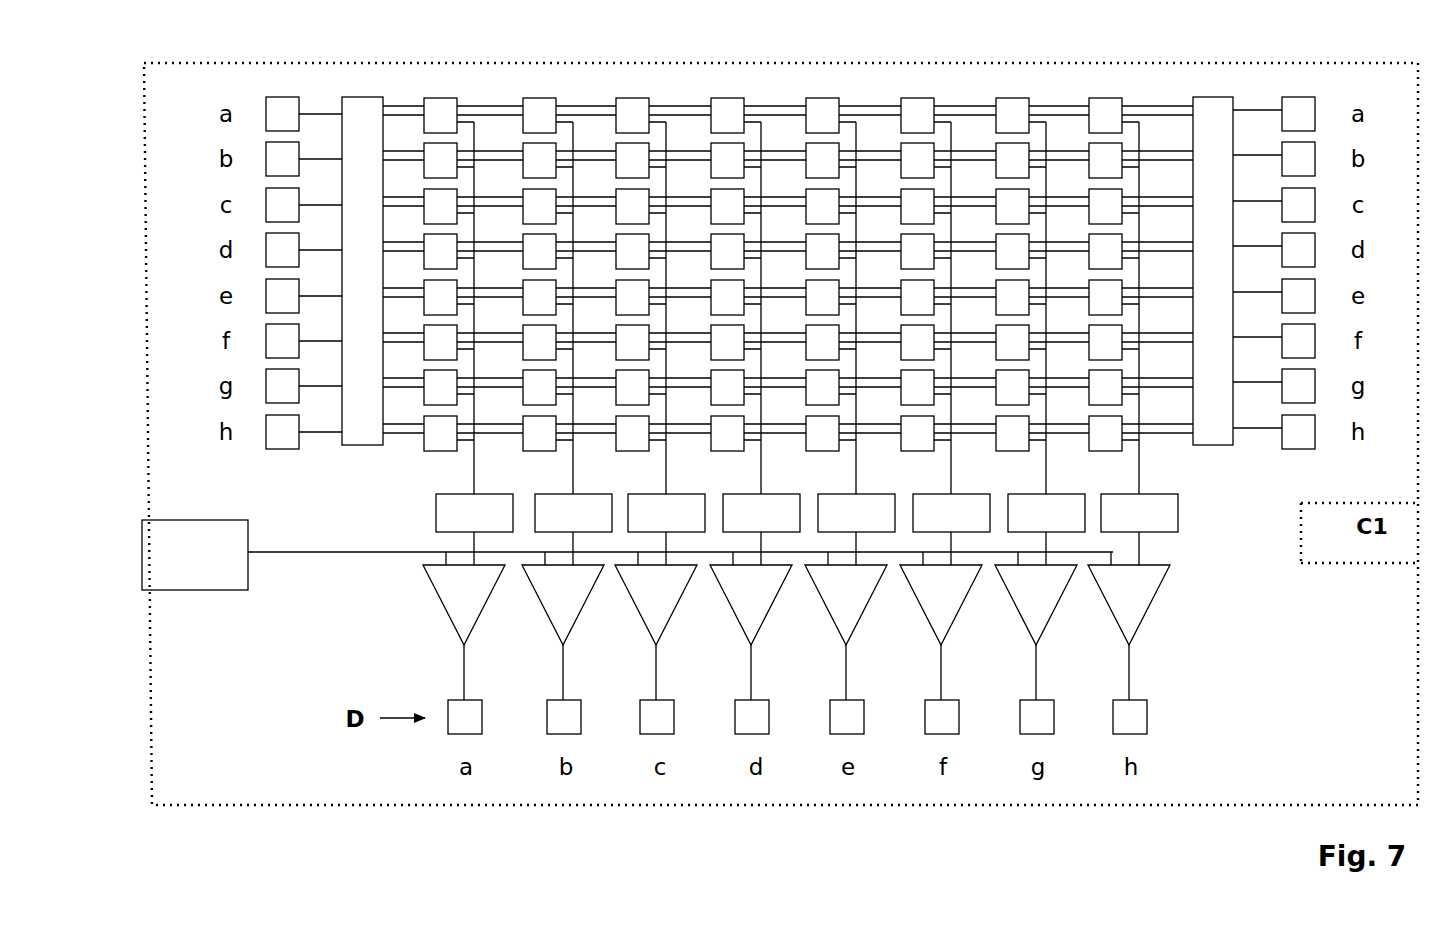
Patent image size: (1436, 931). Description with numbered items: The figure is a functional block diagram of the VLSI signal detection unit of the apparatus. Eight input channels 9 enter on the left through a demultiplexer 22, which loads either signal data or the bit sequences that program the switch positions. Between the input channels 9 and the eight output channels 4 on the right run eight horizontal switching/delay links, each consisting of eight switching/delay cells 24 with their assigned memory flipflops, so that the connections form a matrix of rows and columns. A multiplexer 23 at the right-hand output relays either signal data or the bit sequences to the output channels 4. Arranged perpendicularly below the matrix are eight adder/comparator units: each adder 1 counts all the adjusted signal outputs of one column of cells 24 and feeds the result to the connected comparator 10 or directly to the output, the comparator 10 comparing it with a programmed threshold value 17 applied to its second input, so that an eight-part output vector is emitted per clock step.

The adder 1 is at (416, 512).
The output channels 4 is at (1298, 92).
The input channels 9 is at (280, 90).
The comparator 10 is at (425, 596).
The threshold value 17 is at (190, 592).
The demultiplexer 22 is at (363, 92).
The multiplexer 23 is at (1212, 92).
The switching/delay cells 24 is at (457, 95).